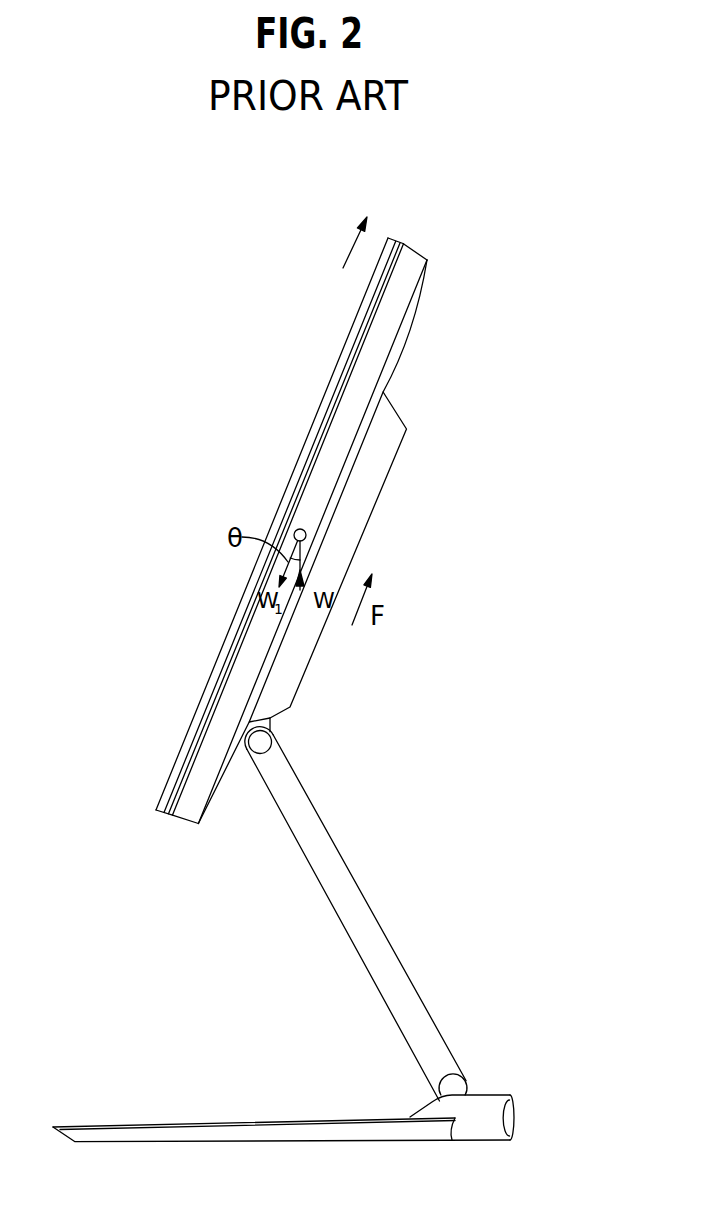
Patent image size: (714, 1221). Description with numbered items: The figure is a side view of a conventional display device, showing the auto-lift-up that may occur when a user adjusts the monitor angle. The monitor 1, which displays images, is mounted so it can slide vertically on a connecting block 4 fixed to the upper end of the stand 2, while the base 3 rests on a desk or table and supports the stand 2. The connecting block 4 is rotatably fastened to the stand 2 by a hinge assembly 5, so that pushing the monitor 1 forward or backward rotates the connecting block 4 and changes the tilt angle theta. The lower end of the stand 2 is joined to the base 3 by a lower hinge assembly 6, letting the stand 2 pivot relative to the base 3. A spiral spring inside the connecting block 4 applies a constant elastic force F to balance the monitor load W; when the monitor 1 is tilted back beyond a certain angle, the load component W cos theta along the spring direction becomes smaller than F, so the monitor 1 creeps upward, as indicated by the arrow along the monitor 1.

The monitor 1 is at (323, 407).
The stand 2 is at (342, 880).
The base 3 is at (200, 1127).
The connecting block 4 is at (380, 481).
The hinge assembly 5 is at (263, 740).
The lower hinge assembly 6 is at (459, 1079).